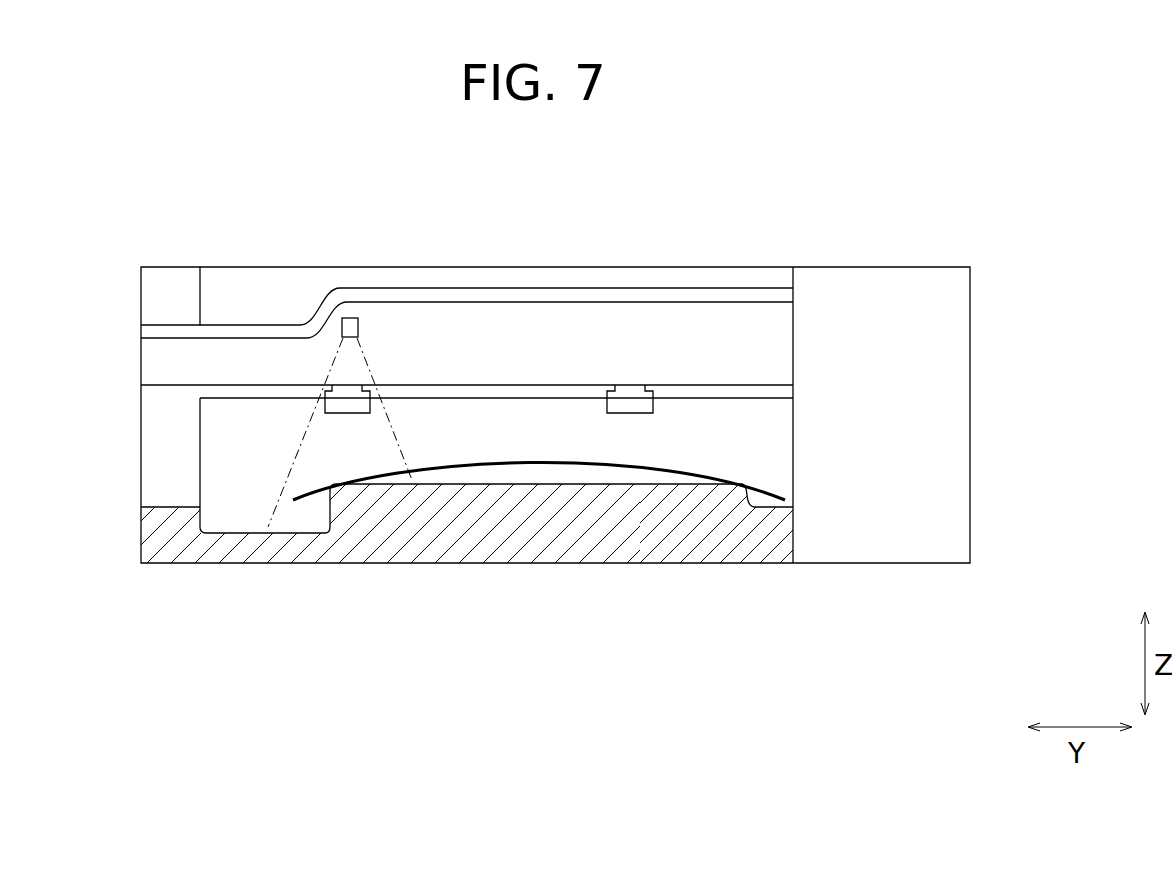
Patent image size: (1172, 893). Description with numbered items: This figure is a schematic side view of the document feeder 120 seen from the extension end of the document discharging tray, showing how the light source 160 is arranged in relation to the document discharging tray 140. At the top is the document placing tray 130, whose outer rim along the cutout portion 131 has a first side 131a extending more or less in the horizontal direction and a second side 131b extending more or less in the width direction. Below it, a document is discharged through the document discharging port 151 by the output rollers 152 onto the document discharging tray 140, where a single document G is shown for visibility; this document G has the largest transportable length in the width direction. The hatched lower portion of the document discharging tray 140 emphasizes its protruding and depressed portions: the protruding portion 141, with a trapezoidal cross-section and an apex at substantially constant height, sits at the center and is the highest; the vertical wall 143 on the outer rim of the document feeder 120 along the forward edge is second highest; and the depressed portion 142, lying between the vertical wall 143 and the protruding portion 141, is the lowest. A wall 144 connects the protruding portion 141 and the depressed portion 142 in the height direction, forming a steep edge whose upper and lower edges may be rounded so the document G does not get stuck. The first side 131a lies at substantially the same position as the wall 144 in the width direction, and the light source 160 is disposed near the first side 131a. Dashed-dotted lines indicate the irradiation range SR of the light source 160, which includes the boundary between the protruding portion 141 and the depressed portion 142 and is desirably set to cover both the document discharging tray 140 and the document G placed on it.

The document feeder 120 is at (882, 248).
The document placing tray 130 is at (590, 300).
The cutout portion 131 is at (257, 262).
The first side 131a is at (339, 287).
The second side 131b is at (232, 330).
The light source 160 is at (360, 328).
The irradiation range SR is at (353, 368).
The document discharging port 151 is at (200, 392).
The output rollers 152 is at (632, 385).
The document G is at (683, 466).
The document discharging tray 140 is at (464, 520).
The protruding portion 141 is at (505, 476).
The depressed portion 142 is at (241, 522).
The vertical wall 143 is at (170, 507).
The wall 144 is at (328, 515).